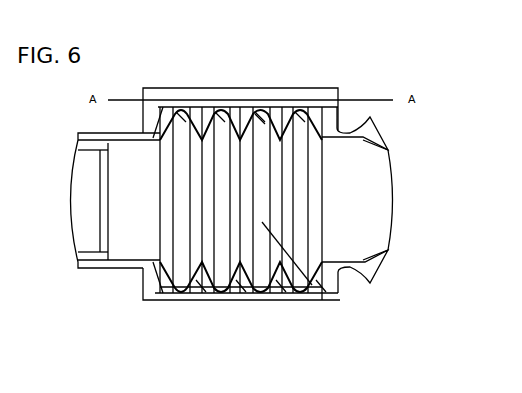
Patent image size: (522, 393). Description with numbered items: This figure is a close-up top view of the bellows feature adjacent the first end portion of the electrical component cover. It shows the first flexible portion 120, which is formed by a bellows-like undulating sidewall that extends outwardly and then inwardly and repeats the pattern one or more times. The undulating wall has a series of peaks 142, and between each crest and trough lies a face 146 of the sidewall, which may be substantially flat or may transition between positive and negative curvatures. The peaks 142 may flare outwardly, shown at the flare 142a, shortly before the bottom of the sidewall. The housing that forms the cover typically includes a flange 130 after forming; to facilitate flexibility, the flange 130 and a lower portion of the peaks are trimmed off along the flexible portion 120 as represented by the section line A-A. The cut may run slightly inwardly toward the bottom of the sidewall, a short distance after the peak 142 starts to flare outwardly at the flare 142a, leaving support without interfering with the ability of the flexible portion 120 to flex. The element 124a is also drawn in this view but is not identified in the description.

The bellows boot 120 is at (323, 262).
The collar 130 is at (340, 88).
The ridge 142 is at (183, 280).
The ridge apex 142a is at (186, 92).
The inner wall portion 124a is at (265, 92).
The groove 146 is at (195, 295).